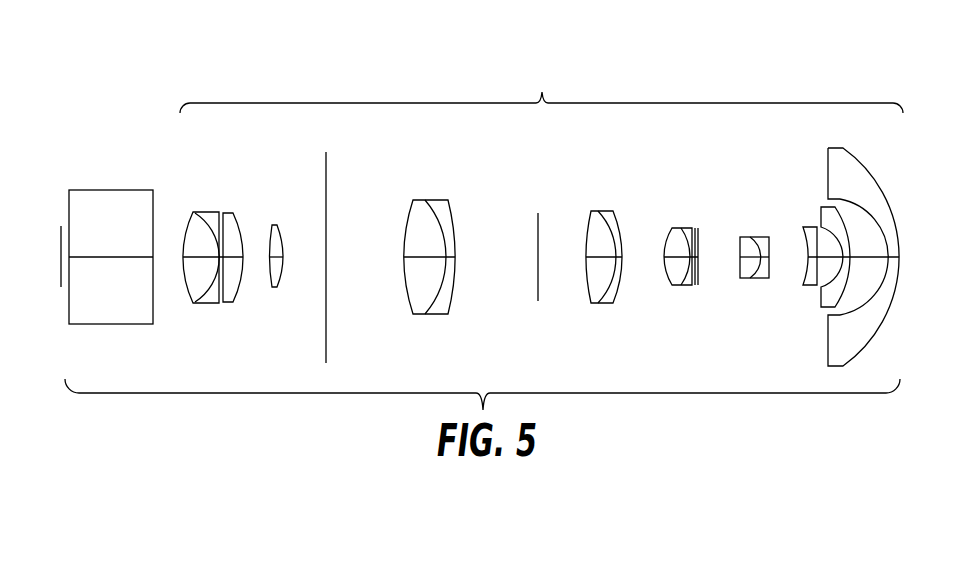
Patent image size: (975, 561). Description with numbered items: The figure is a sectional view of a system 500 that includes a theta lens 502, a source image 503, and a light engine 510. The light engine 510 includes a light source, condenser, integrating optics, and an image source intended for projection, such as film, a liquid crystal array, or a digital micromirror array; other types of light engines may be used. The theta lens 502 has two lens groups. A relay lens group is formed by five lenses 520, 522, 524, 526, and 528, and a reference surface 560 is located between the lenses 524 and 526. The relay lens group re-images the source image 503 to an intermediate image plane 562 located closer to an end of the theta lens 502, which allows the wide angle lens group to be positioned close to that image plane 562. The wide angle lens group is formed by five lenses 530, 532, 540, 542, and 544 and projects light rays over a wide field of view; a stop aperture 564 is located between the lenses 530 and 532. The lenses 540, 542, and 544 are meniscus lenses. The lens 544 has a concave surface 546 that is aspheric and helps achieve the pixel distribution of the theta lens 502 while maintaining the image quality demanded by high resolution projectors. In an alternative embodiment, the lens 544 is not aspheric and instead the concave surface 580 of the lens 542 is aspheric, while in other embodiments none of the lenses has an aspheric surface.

The system 500 is at (165, 33).
The theta lens 502 is at (543, 92).
The source image 503 is at (59, 257).
The light engine 510 is at (111, 190).
The lens 520 is at (204, 211).
The lens 522 is at (238, 290).
The lens 524 is at (273, 225).
The lens 526 is at (430, 199).
The lens 528 is at (605, 211).
The lens 530 is at (683, 227).
The lens 532 is at (751, 280).
The meniscus lens 540 is at (804, 227).
The meniscus lens 542 is at (821, 210).
The meniscus lens 544 is at (826, 172).
The concave surface 546 is at (872, 220).
The reference surface 560 is at (325, 167).
The intermediate image plane 562 is at (537, 230).
The stop aperture 564 is at (698, 242).
The concave surface 580 is at (826, 289).